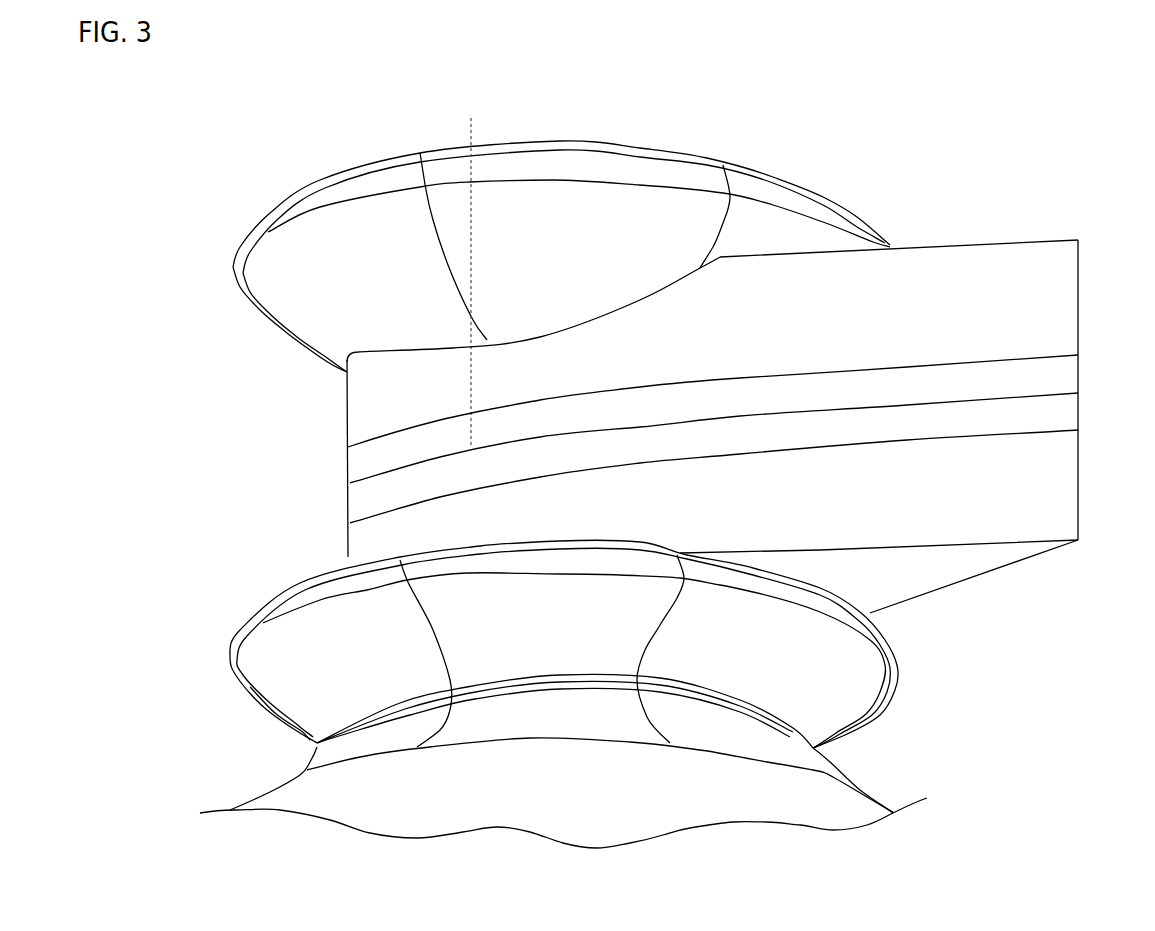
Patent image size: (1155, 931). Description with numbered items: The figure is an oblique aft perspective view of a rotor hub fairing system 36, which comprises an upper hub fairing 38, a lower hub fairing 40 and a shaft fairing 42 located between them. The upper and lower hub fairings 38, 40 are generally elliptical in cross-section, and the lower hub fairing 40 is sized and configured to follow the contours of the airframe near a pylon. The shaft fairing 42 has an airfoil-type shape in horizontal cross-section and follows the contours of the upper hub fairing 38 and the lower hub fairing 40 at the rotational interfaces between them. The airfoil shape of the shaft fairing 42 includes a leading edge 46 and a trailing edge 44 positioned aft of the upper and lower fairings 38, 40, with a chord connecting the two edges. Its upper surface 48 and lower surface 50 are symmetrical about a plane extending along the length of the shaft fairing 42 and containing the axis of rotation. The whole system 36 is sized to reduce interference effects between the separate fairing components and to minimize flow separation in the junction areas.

The rotor hub fairing system 36 is at (972, 195).
The upper hub fairing 38 is at (784, 176).
The lower hub fairing 40 is at (872, 714).
The shaft fairing 42 is at (365, 480).
The trailing edge 44 is at (1080, 472).
The leading edge 46 is at (348, 412).
The upper surface 48 is at (930, 593).
The lower surface 50 is at (848, 548).